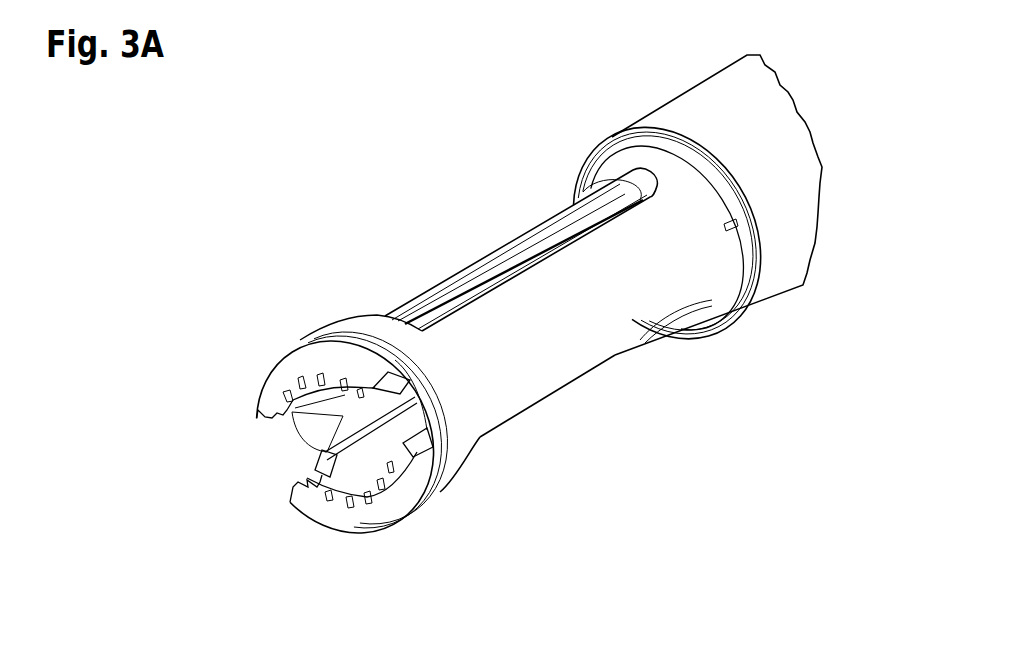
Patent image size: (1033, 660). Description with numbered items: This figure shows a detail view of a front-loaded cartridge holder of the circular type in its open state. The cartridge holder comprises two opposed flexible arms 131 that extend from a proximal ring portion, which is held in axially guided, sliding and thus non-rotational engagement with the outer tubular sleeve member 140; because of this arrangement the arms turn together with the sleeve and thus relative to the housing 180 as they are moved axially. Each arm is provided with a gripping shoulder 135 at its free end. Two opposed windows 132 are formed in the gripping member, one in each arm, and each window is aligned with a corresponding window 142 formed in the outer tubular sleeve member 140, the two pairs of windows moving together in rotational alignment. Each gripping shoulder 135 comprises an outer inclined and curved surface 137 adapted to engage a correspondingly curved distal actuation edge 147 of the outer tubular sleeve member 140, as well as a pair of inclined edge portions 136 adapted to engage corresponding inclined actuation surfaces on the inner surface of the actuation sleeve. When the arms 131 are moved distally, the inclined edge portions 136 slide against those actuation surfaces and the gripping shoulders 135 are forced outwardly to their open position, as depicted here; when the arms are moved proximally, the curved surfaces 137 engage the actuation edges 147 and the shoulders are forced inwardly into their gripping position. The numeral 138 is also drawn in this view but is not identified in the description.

The flexible arms 131 is at (508, 255).
The windows 132 is at (448, 300).
The gripping shoulder 135 is at (275, 388).
The inclined edge portions 136 is at (317, 464).
The outer inclined and curved surface 137 is at (395, 363).
The lower jaw 138 is at (322, 483).
The outer tubular sleeve member 140 is at (608, 338).
The window 142 is at (530, 410).
The distal actuation edge 147 is at (435, 467).
The housing 180 is at (688, 110).